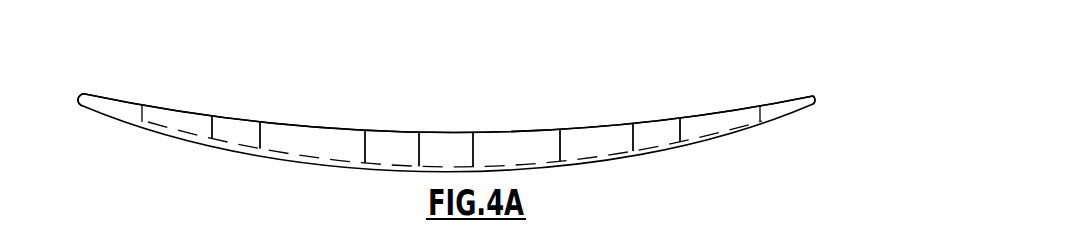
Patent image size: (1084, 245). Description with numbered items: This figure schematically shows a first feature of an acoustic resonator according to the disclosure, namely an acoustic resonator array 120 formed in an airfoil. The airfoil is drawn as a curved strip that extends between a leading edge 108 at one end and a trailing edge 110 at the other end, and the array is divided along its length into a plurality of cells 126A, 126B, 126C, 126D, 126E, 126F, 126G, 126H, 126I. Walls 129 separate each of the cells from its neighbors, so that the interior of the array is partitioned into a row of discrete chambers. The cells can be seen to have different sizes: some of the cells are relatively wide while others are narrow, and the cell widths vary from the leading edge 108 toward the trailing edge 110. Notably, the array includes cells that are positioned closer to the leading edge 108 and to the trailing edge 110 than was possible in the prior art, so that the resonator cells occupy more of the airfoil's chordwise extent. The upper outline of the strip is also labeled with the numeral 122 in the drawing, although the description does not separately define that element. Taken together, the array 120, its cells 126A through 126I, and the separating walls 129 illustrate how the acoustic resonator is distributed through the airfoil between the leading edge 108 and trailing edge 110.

The acoustic resonator array 120 is at (637, 68).
The upper surface of strip 122 is at (163, 106).
The leading edge 108 is at (80, 93).
The trailing edge 110 is at (813, 97).
The walls 129 is at (198, 133).
The cell 126A is at (191, 118).
The cell 126B is at (236, 127).
The cell 126C is at (312, 140).
The cell 126D is at (395, 140).
The cell 126E is at (446, 148).
The cell 126F is at (520, 137).
The cell 126G is at (592, 137).
The cell 126H is at (657, 128).
The cell 126I is at (739, 118).